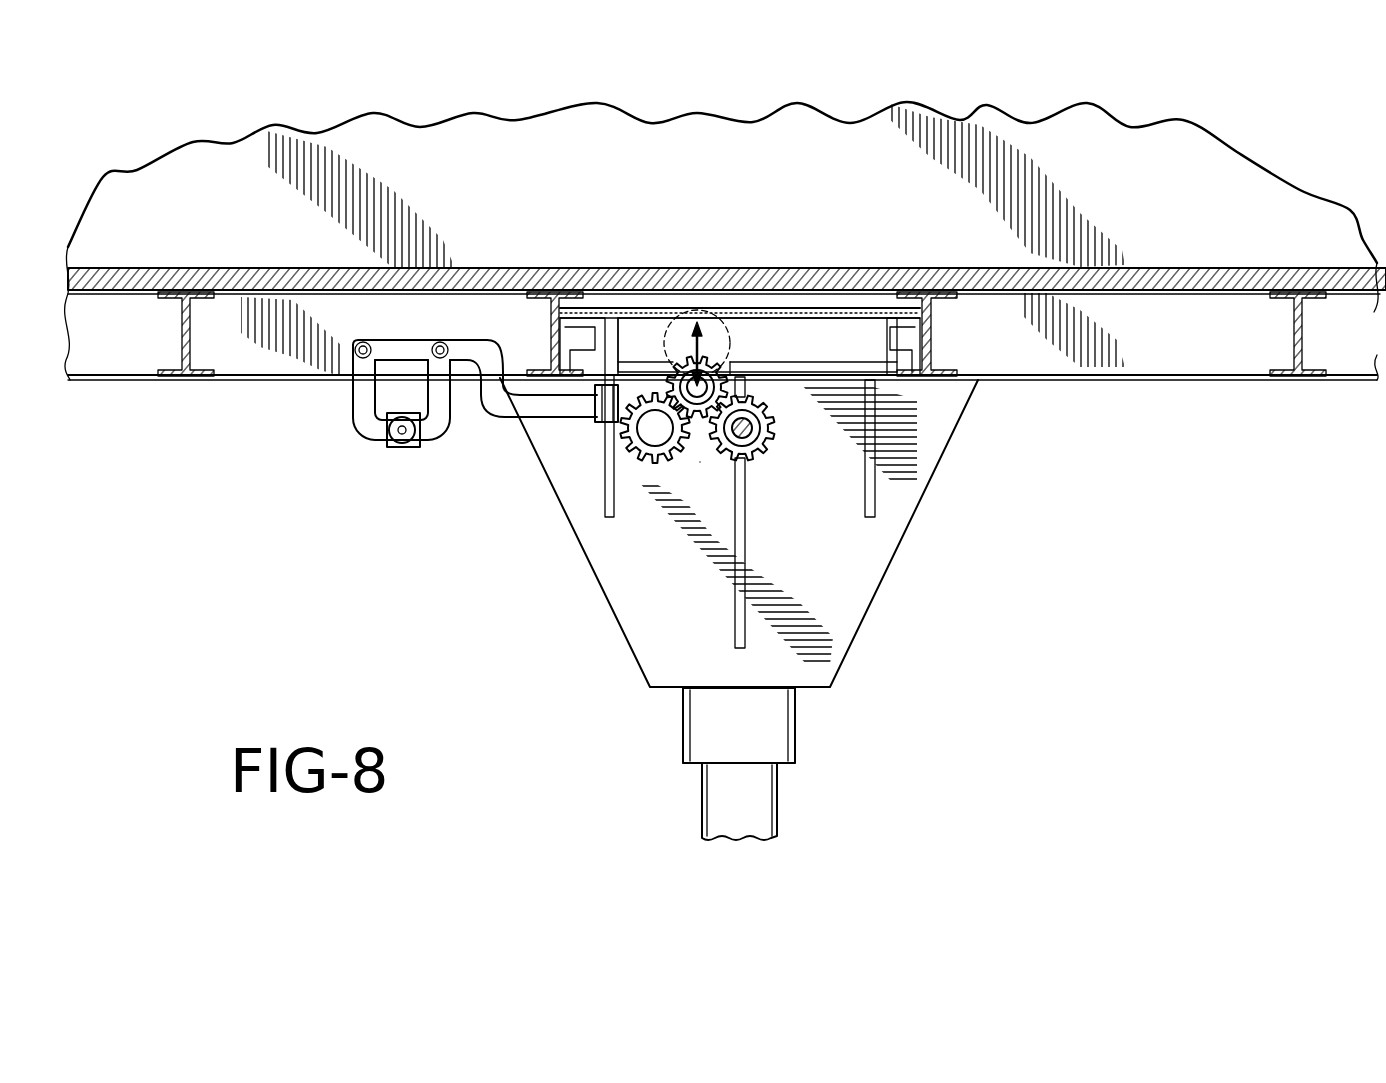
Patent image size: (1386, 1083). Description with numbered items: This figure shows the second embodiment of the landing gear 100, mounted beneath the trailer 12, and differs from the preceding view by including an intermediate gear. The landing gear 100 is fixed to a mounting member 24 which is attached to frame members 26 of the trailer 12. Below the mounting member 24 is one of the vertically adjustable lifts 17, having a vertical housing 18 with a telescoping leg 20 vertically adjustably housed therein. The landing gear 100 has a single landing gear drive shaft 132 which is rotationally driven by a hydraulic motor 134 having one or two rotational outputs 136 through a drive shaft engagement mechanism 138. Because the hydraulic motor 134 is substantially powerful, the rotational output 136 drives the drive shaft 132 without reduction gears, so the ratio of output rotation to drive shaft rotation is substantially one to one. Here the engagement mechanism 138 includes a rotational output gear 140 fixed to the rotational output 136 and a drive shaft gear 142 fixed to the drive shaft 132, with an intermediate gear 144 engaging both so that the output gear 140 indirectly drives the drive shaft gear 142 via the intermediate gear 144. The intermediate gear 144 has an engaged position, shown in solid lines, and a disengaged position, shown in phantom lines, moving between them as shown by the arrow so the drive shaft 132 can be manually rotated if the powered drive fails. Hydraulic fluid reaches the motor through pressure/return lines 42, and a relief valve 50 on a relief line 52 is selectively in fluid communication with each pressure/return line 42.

The trailer 12 is at (1264, 167).
The vertically adjustable lift 17 is at (805, 733).
The vertical housing 18 is at (700, 730).
The telescoping leg 20 is at (718, 805).
The mounting member 24 is at (833, 583).
The frame member 26 is at (181, 333).
The pressure/return line 42 is at (473, 341).
The relief valve 50 is at (400, 447).
The relief line 52 is at (352, 420).
The landing gear 100 is at (530, 568).
The landing gear drive shaft 132 is at (750, 420).
The hydraulic motor 134 is at (612, 452).
The rotational output 136 is at (652, 440).
The drive shaft engagement mechanism 138 is at (706, 472).
The rotational output gear 140 is at (658, 466).
The drive shaft gear 142 is at (757, 458).
The intermediate gear 144 is at (667, 380).